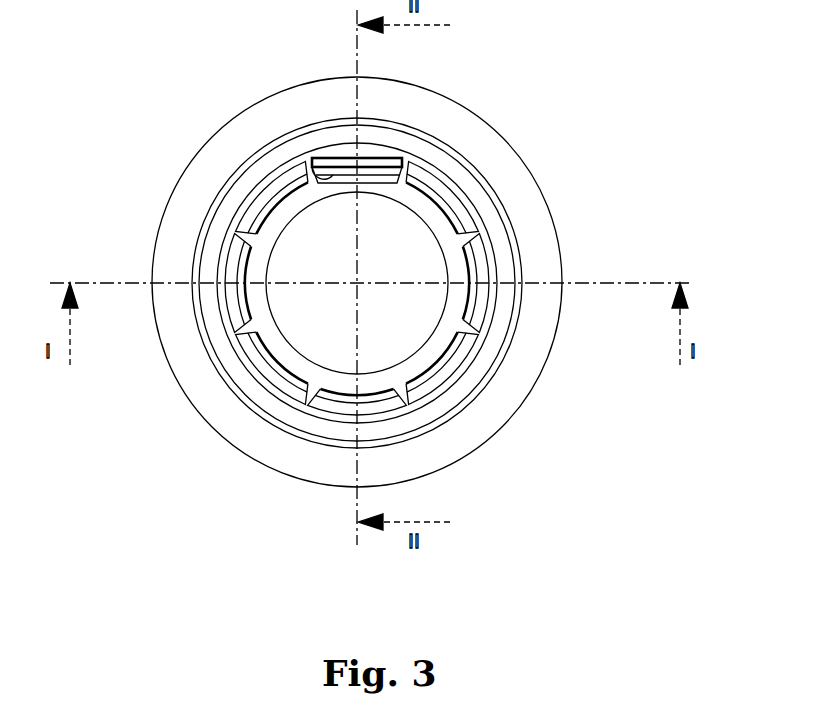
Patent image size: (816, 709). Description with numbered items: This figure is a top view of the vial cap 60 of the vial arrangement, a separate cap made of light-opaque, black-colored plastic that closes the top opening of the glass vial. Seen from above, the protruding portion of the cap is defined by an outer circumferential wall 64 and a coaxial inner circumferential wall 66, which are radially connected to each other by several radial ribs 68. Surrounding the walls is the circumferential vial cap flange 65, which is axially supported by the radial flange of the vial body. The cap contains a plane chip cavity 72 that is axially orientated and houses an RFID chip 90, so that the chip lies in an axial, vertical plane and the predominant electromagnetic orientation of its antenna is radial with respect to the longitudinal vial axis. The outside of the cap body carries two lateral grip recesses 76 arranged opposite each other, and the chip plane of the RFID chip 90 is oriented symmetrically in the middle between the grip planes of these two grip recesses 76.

The vial cap 60 is at (97, 205).
The outer circumferential wall 64 is at (505, 262).
The vial cap flange 65 is at (535, 343).
The inner circumferential wall 66 is at (507, 298).
The radial ribs 68 is at (405, 400).
The chip cavity 72 is at (307, 178).
The grip recesses 76 is at (505, 207).
The RFID chip 90 is at (402, 160).